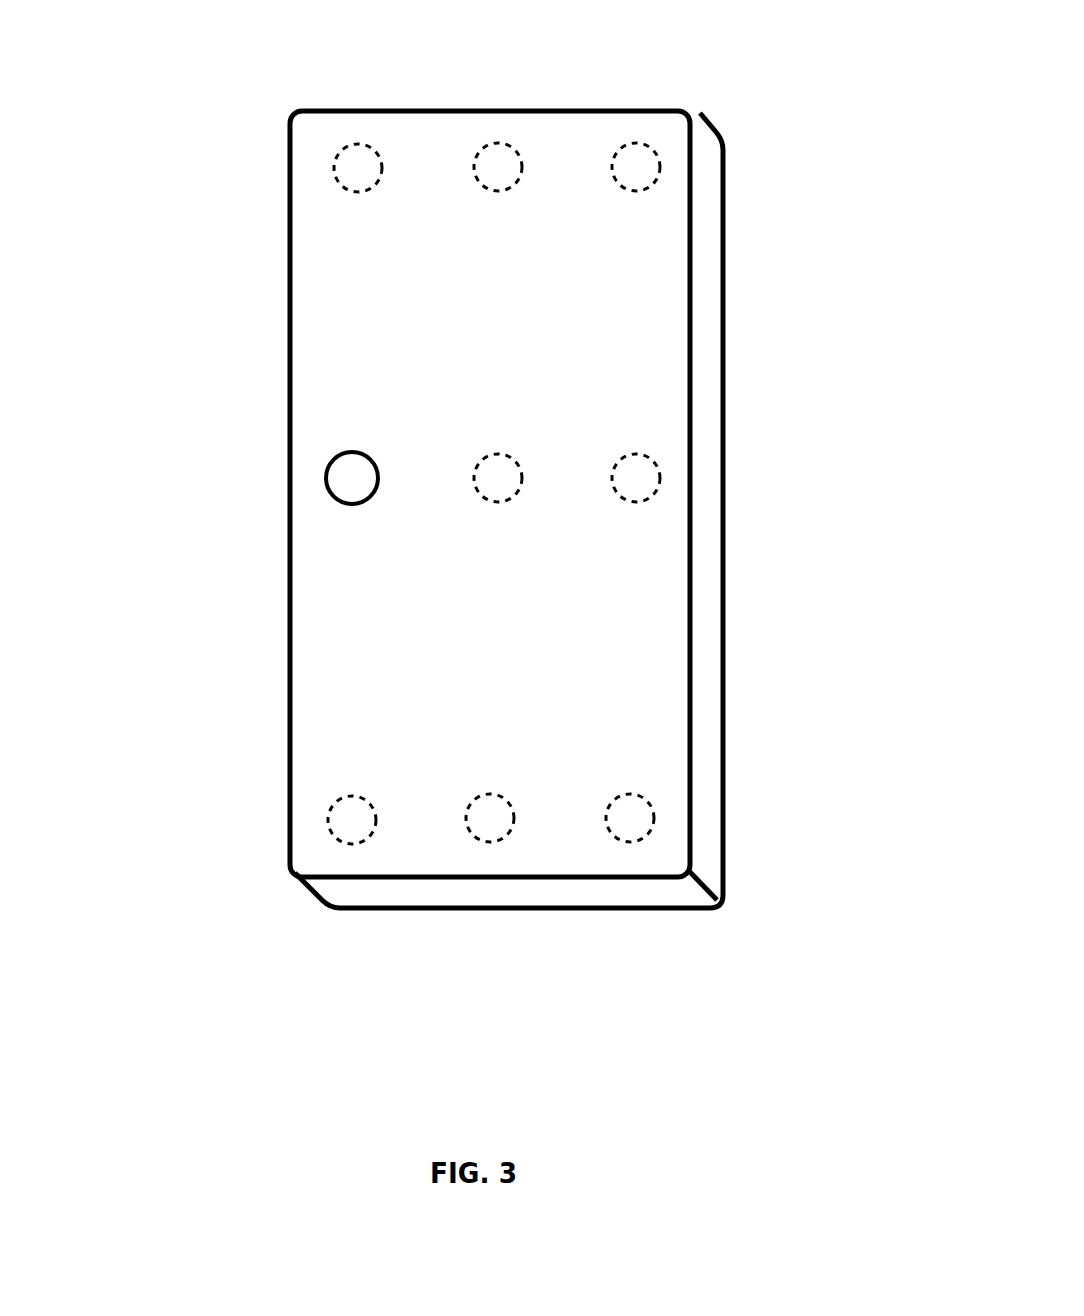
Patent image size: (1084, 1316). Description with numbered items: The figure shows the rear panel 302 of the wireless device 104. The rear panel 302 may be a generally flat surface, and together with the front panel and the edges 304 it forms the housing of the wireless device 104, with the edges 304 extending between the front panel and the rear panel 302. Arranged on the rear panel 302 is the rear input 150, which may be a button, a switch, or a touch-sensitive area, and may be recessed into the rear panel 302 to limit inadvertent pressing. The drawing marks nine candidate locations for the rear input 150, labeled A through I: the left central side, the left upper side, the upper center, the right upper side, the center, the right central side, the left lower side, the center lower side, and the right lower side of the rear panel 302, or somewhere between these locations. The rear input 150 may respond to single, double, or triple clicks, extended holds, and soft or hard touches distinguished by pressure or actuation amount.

The wireless device 104 is at (480, 73).
The rear input 150 is at (320, 133).
The rear panel 302 is at (674, 316).
The edges 304 is at (700, 552).